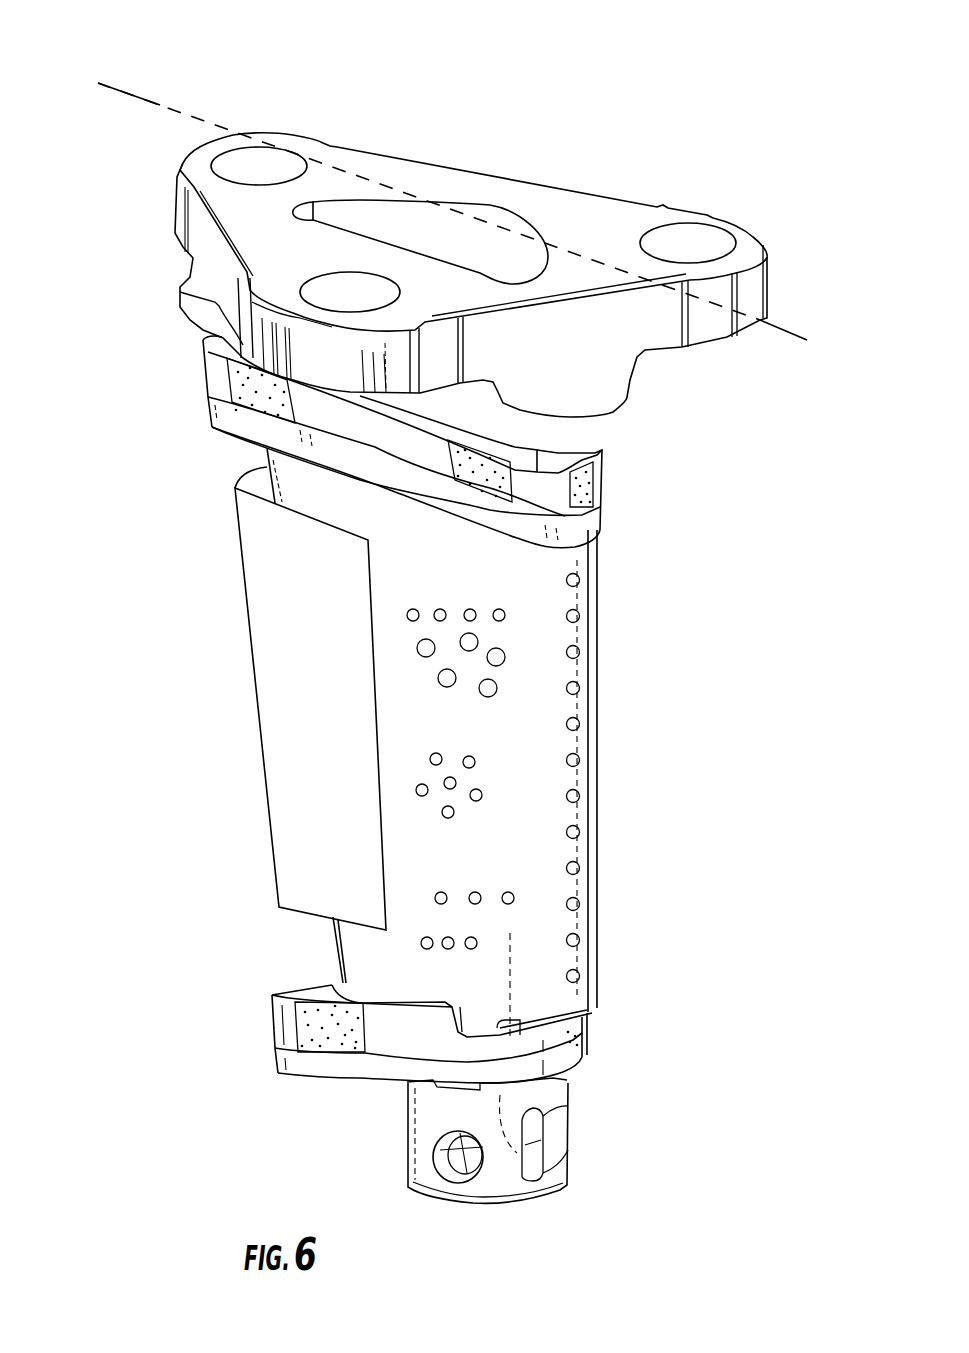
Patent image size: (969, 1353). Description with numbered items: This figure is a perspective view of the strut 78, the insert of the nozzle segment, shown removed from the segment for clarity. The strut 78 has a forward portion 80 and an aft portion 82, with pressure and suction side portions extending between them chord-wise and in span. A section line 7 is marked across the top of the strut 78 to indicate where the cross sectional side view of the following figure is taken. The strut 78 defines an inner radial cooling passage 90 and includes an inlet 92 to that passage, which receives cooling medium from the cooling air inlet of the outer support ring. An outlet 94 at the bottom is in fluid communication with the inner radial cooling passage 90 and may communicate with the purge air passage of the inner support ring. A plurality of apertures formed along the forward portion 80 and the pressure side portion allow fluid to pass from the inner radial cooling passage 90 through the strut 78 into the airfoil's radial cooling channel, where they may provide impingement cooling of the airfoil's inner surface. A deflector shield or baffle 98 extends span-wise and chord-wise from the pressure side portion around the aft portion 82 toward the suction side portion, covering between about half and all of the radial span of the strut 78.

The section line 7 is at (117, 43).
The strut 78 is at (446, 613).
The forward portion 80 is at (472, 744).
The aft portion 82 is at (327, 948).
The inner radial cooling passage 90 is at (433, 213).
The inlet 92 is at (527, 226).
The outlet 94 is at (523, 1150).
The baffle 98 is at (294, 715).